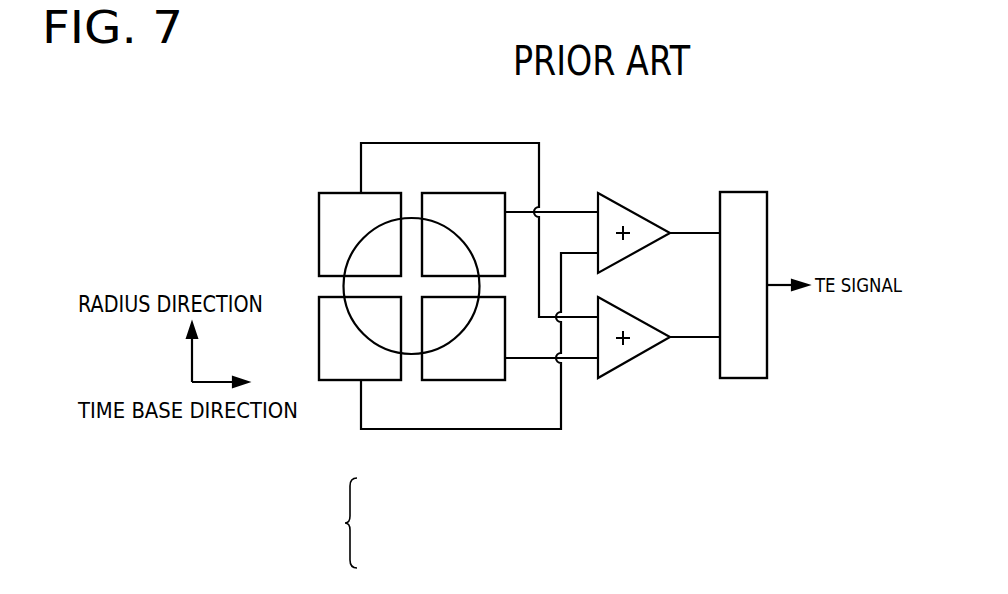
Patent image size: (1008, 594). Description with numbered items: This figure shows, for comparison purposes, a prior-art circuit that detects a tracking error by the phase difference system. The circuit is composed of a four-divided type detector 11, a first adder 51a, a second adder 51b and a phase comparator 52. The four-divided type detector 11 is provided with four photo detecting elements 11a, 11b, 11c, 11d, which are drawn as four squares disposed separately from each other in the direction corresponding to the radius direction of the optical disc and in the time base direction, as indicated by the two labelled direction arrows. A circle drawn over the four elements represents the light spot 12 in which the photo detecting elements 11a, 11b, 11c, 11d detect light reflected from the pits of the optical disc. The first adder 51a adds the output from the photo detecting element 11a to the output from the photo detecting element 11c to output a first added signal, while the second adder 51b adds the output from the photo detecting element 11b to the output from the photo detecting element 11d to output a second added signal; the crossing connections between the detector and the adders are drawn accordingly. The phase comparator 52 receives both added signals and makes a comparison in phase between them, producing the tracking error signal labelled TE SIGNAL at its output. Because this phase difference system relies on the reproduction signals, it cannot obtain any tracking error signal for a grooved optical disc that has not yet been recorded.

The four-divided type detector 11 is at (359, 523).
The photo detecting element 11a is at (474, 206).
The photo detecting element 11b is at (319, 237).
The photo detecting element 11c is at (319, 343).
The photo detecting element 11d is at (475, 372).
The light beam spot 12 is at (347, 280).
The first adder 51a is at (637, 212).
The second adder 51b is at (634, 362).
The phase comparator 52 is at (741, 192).